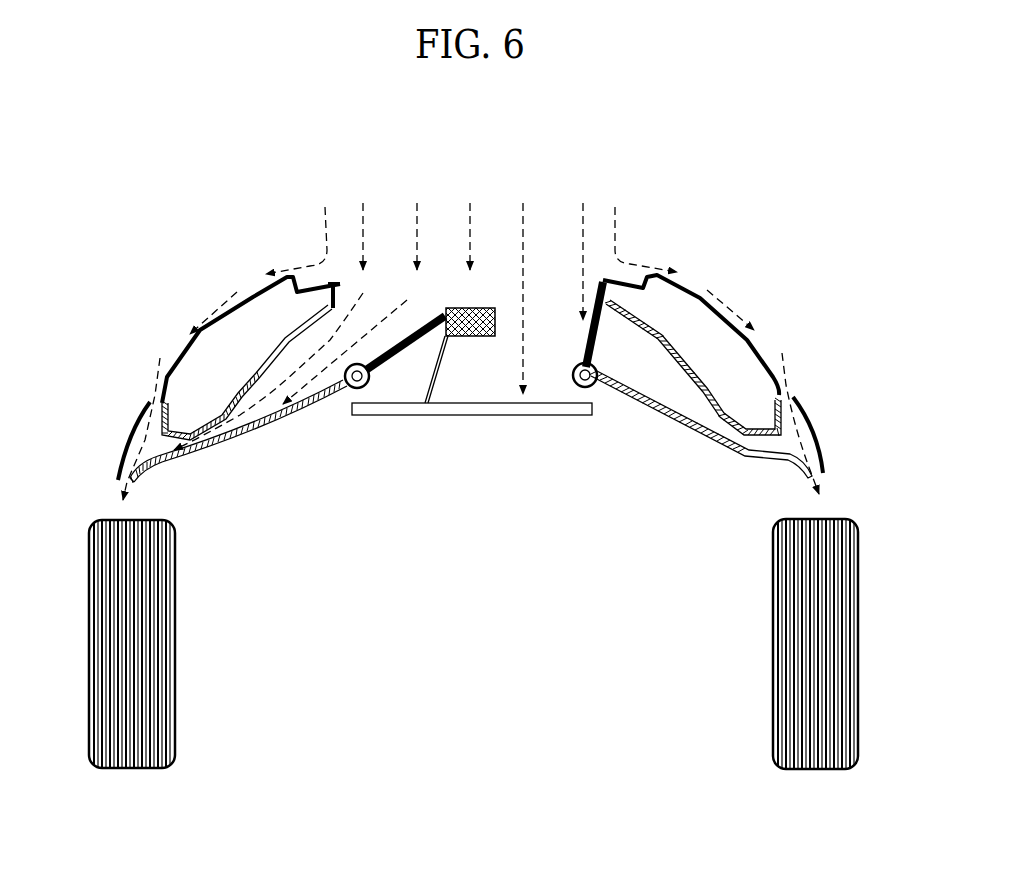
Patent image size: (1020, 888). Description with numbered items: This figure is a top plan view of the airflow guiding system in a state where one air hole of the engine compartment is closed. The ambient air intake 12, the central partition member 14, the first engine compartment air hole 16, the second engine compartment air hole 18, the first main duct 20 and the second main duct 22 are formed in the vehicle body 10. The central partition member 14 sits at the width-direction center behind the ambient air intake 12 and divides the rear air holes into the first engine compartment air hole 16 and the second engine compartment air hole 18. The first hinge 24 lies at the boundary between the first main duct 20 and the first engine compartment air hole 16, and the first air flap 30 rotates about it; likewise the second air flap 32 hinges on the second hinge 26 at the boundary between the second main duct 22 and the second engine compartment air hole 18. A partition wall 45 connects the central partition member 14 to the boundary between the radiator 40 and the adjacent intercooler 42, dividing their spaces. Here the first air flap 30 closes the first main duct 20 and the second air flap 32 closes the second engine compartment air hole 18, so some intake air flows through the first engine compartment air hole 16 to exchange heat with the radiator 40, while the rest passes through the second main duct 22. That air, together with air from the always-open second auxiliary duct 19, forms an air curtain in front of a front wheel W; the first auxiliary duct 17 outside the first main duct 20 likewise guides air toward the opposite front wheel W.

The vehicle body 10 is at (255, 297).
The ambient air intake 12 is at (450, 267).
The central partition member 14 is at (493, 308).
The first engine compartment air hole 16 is at (548, 347).
The first auxiliary duct 17 is at (806, 445).
The second engine compartment air hole 18 is at (398, 360).
The second auxiliary duct 19 is at (147, 454).
The first main duct 20 is at (727, 452).
The second main duct 22 is at (218, 445).
The first hinge 24 is at (617, 393).
The second hinge 26 is at (345, 382).
The first air flap 30 is at (603, 280).
The second air flap 32 is at (417, 335).
The radiator 40 is at (508, 415).
The intercooler 42 is at (370, 415).
The partition wall 45 is at (452, 367).
The front wheel W is at (133, 769).